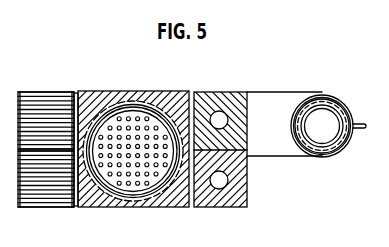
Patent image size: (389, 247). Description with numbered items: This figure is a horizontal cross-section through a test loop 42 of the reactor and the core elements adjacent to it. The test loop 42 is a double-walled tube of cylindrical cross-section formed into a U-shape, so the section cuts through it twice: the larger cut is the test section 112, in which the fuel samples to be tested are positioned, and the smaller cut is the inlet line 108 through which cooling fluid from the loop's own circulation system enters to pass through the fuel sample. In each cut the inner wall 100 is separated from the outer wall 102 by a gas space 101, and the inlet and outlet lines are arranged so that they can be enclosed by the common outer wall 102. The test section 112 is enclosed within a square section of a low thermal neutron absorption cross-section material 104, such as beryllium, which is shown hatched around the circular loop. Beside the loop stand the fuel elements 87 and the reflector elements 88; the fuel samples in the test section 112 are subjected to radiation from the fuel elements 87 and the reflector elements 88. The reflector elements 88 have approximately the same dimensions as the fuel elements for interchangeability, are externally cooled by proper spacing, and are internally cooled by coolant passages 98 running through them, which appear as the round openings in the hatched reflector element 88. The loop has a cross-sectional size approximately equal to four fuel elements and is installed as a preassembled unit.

The test loop 42 is at (108, 91).
The fuel elements 87 is at (50, 112).
The reflector elements 88 is at (212, 103).
The coolant passages 98 is at (222, 118).
The inner wall 100 is at (102, 193).
The gas space 101 is at (99, 112).
The outer wall 102 is at (132, 193).
The low thermal neutron absorption cross-section material 104 is at (180, 193).
The inlet line 108 is at (328, 130).
The test section 112 is at (141, 138).